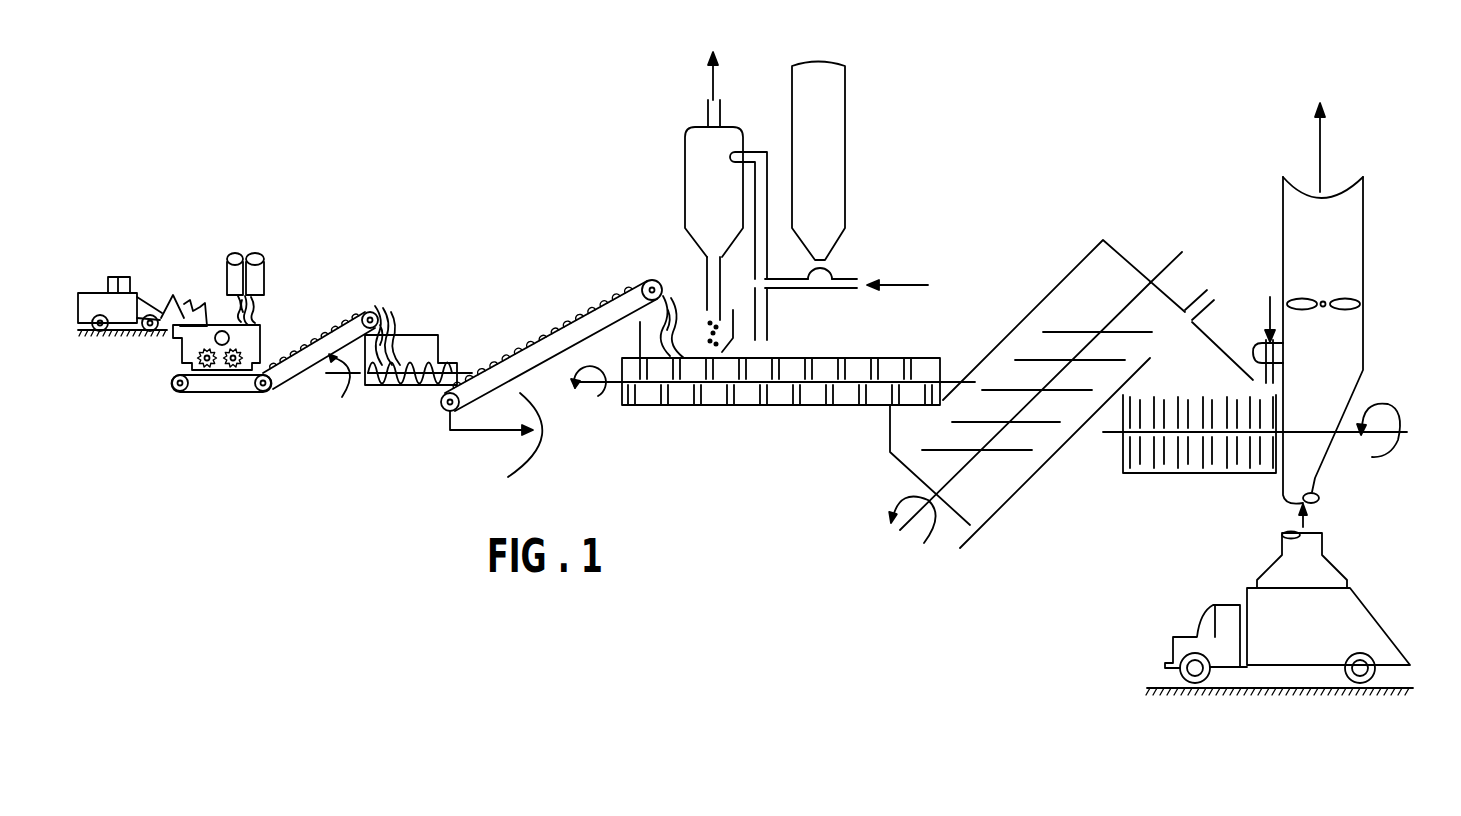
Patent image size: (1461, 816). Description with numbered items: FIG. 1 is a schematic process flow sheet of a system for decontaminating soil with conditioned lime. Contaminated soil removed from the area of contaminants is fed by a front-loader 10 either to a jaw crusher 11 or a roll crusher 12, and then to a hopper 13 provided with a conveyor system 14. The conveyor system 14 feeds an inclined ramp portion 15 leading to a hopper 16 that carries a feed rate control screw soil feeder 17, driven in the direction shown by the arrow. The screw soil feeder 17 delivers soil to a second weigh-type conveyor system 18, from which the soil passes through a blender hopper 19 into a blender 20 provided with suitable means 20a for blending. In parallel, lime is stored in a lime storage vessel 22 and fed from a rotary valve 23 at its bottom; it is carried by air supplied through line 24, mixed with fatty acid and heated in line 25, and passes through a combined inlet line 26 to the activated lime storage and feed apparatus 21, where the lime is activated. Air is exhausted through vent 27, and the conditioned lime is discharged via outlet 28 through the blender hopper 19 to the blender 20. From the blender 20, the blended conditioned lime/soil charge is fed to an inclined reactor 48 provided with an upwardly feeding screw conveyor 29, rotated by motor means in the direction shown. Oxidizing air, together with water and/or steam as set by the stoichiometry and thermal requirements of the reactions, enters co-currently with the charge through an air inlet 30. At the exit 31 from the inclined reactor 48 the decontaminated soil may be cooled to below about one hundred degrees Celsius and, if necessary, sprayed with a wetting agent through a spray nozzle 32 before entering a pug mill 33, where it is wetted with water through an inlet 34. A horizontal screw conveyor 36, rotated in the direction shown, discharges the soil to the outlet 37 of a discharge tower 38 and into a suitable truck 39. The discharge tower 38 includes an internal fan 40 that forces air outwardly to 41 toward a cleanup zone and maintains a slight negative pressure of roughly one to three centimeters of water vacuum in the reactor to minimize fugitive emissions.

The front-loader 10 is at (203, 249).
The jaw crusher 11 is at (260, 258).
The roll crusher 12 is at (173, 347).
The hopper 13 is at (260, 338).
The conveyor system 14 is at (227, 393).
The inclined ramp portion 15 is at (308, 360).
The hopper 16 is at (437, 335).
The feed rate control screw soil feeder 17 is at (413, 387).
The second weigh-type conveyor system 18 is at (538, 355).
The blender hopper 19 is at (602, 333).
The blender 20 is at (670, 405).
The means for blending 20a is at (843, 405).
The activated lime storage and feed apparatus 21 is at (685, 187).
The lime storage vessel 22 is at (845, 183).
The rotary valve 23 is at (835, 273).
The line 24 is at (845, 293).
The line 25 is at (765, 300).
The combined inlet line 26 is at (747, 150).
The vent 27 is at (705, 115).
The outlet 28 is at (705, 283).
The upwardly feeding screw conveyor 29 is at (963, 468).
The air inlet 30 is at (962, 533).
The exit 31 is at (1167, 338).
The spray nozzle 32 is at (1180, 256).
The pug mill 33 is at (1225, 473).
The inlet 34 is at (1283, 360).
The horizontal screw conveyor 36 is at (1163, 450).
The outlet 37 is at (1305, 477).
The discharge tower 38 is at (1363, 262).
The truck 39 is at (1362, 615).
The internal fan 40 is at (1340, 310).
The air outlet to cleanup zone 41 is at (1333, 180).
The inclined reactor 48 is at (1057, 282).